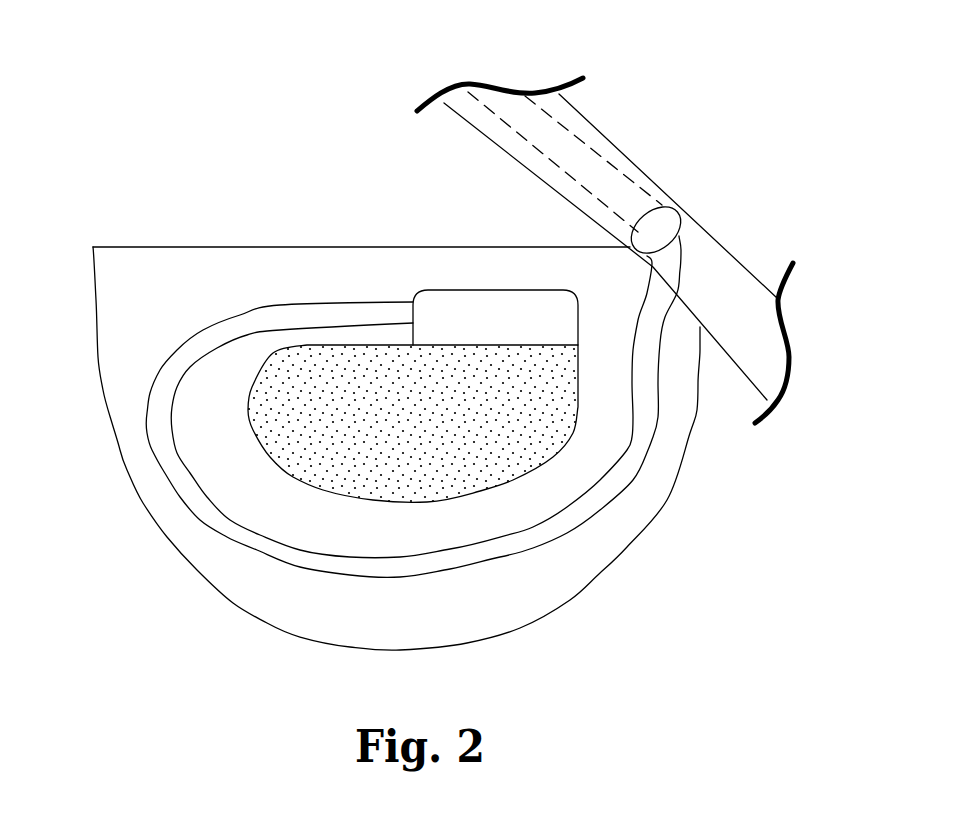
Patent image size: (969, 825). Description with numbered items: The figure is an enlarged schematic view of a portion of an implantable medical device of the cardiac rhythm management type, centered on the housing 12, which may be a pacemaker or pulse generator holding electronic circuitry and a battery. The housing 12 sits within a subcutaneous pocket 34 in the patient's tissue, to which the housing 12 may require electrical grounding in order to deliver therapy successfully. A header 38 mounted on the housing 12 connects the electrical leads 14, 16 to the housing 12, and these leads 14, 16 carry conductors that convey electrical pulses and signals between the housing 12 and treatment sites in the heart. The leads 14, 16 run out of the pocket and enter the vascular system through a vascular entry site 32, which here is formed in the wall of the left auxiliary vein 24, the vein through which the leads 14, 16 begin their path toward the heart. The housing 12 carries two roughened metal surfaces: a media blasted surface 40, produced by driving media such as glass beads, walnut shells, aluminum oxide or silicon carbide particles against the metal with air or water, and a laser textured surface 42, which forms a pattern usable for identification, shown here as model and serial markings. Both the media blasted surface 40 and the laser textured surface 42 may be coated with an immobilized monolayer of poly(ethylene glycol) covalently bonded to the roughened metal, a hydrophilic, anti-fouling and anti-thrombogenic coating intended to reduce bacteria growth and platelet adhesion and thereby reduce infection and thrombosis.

The housing 12 is at (435, 340).
The lead 14 is at (498, 106).
The lead 16 is at (603, 158).
The left auxiliary vein 24 is at (710, 228).
The vascular entry site 32 is at (668, 207).
The subcutaneous pocket 34 is at (627, 547).
The header 38 is at (458, 290).
The media blasted surface 40 is at (390, 473).
The laser textured surface 42 is at (508, 448).